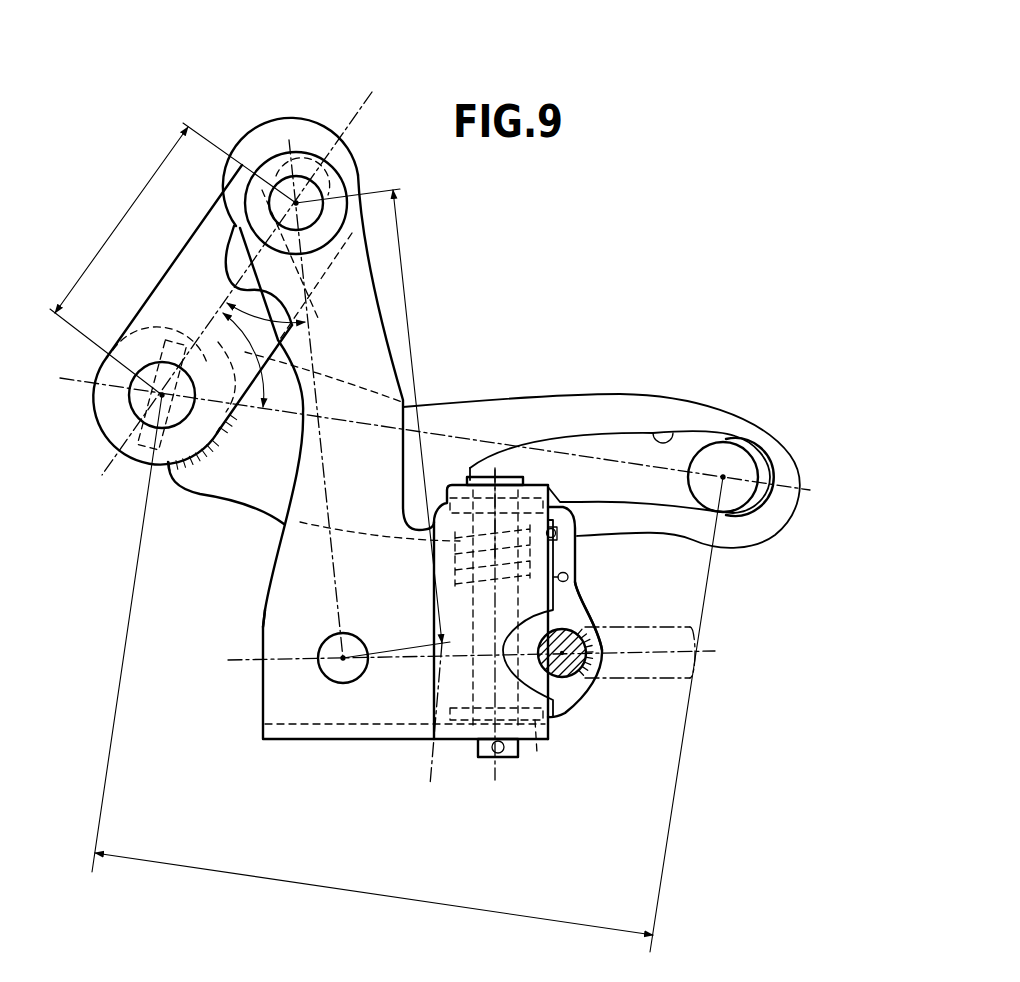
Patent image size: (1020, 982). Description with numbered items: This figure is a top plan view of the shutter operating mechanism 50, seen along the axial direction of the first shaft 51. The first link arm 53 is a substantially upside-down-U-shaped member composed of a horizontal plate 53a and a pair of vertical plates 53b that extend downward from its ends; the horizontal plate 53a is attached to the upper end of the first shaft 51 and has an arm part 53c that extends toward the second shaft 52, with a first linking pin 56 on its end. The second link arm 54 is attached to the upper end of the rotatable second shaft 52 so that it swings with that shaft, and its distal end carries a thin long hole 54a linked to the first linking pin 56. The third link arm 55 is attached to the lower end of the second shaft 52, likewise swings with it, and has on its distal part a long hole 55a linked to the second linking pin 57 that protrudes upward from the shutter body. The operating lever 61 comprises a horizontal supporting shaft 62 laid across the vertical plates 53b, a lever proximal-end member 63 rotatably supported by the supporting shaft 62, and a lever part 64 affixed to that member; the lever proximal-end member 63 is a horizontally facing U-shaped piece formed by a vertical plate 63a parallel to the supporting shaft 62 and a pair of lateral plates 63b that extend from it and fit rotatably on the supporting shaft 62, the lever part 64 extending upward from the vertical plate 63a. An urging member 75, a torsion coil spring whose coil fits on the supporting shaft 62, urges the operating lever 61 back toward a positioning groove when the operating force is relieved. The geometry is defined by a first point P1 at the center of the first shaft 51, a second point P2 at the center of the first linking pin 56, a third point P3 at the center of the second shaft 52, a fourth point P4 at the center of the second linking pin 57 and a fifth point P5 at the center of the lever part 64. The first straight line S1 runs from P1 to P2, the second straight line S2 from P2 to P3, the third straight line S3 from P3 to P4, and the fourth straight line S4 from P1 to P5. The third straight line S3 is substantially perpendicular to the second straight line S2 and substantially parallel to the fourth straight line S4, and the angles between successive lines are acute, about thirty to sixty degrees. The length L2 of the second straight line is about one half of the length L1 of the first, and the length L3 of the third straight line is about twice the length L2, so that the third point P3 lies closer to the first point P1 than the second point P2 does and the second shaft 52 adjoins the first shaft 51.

The shutter operating mechanism 50 is at (673, 116).
The first shaft 51 is at (337, 672).
The second shaft 52 is at (133, 439).
The first link arm 53 is at (259, 690).
The horizontal plate 53a is at (282, 620).
The vertical plate 53b is at (533, 478).
The arm part 53c is at (305, 475).
The second link arm 54 is at (243, 150).
The long hole 54a is at (237, 256).
The third link arm 55 is at (642, 395).
The long hole 55a is at (673, 435).
The first linking pin 56 is at (289, 172).
The second linking pin 57 is at (748, 466).
The operating lever 61 is at (672, 682).
The supporting shaft 62 is at (490, 758).
The lever proximal-end member 63 is at (579, 577).
The vertical plate 63a is at (577, 597).
The lateral plate 63b is at (535, 478).
The lever part 64 is at (570, 690).
The urging member 75 is at (560, 548).
The first point P1 is at (345, 662).
The second point P2 is at (298, 200).
The third point P3 is at (130, 406).
The fourth point P4 is at (725, 475).
The fifth point P5 is at (578, 662).
The first straight line S1 is at (327, 484).
The second straight line S2 is at (233, 293).
The third straight line S3 is at (447, 436).
The fourth straight line S4 is at (428, 727).
The length of the first straight line L1 is at (373, 423).
The length of the second straight line L2 is at (173, 259).
The length of the third straight line L3 is at (407, 673).